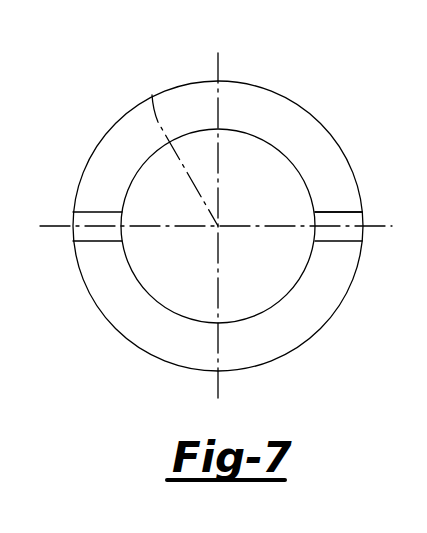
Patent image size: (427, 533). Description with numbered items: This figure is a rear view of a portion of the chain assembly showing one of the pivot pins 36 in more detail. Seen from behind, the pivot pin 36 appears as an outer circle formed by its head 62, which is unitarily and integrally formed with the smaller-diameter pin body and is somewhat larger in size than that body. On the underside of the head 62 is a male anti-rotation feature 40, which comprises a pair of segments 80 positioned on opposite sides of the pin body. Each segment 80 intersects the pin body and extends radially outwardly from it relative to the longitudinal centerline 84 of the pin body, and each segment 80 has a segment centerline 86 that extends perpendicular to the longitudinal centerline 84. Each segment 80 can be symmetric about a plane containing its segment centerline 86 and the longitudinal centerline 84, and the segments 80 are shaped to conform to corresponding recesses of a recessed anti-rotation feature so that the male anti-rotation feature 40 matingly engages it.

The pivot pin 36 is at (143, 322).
The male anti-rotation feature 40 is at (333, 212).
The head 62 is at (277, 92).
The segment 80 is at (96, 212).
The longitudinal centerline 84 is at (152, 88).
The segment centerline 86 is at (377, 228).